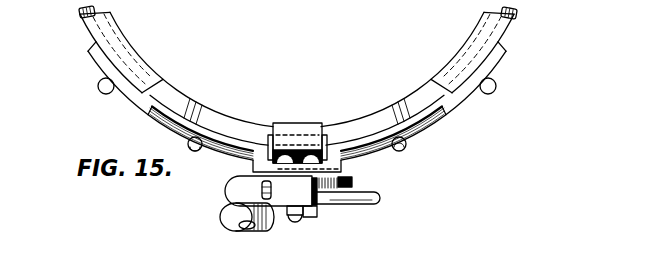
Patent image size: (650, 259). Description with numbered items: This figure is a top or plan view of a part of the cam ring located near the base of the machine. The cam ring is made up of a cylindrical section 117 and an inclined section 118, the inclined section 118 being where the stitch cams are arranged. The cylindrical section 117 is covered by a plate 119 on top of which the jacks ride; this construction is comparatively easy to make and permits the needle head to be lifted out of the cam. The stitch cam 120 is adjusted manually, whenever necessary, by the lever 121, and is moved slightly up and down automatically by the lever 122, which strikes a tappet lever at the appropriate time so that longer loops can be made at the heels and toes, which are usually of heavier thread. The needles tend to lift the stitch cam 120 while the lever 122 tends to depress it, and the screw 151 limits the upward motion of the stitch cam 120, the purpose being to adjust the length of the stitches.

The cylindrical section 117 is at (79, 13).
The inclined section 118 is at (423, 130).
The plate 119 is at (115, 32).
The stitch cam 120 is at (229, 122).
The lever 121 is at (366, 206).
The lever 122 is at (226, 198).
The screw 151 is at (353, 178).